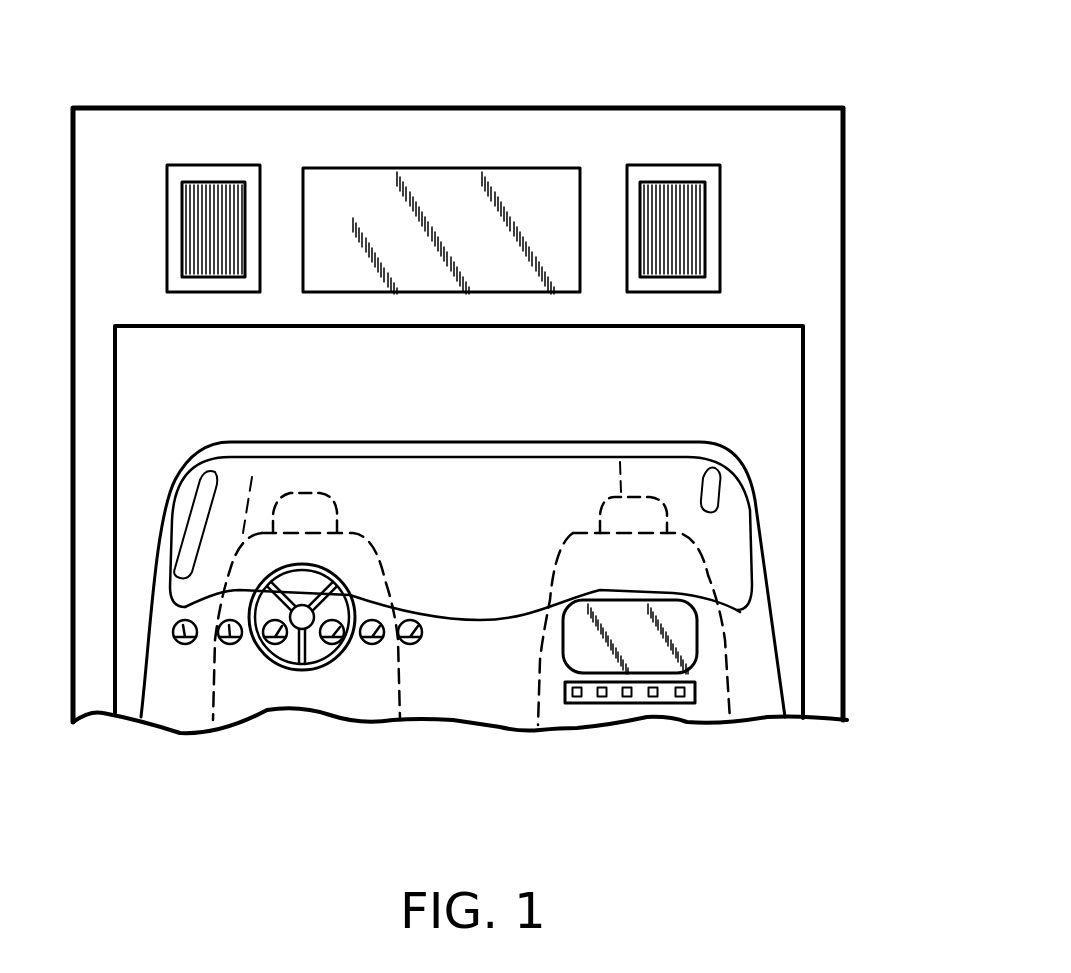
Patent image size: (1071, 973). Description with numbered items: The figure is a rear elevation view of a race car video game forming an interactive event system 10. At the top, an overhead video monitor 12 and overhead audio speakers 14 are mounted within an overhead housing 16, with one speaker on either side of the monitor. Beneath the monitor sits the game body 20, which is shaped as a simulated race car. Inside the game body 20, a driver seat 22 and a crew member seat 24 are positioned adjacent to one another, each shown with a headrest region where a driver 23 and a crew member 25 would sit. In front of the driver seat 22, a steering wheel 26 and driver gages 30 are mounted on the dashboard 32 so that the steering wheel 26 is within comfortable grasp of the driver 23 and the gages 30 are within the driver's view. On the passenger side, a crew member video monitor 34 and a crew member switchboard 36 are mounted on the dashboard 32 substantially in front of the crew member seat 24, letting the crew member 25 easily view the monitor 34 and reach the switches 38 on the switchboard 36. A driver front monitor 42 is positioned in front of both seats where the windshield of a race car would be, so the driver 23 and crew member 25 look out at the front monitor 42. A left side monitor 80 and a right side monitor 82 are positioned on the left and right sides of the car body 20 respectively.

The interactive event system 10 is at (748, 84).
The overhead video monitor 12 is at (355, 178).
The overhead audio speakers 14 is at (203, 183).
The overhead housing 16 is at (122, 125).
The game body 20 is at (770, 505).
The driver seat 22 is at (249, 498).
The driver 23 is at (310, 488).
The crew member seat 24 is at (573, 530).
The crew member 25 is at (620, 462).
The steering wheel 26 is at (272, 663).
The driver gages 30 is at (410, 647).
The dashboard 32 is at (477, 650).
The crew member video monitor 34 is at (670, 642).
The crew member switchboard 36 is at (622, 724).
The switches 38 is at (602, 703).
The driver front monitor 42 is at (481, 559).
The left side monitor 80 is at (207, 527).
The right side monitor 82 is at (706, 474).